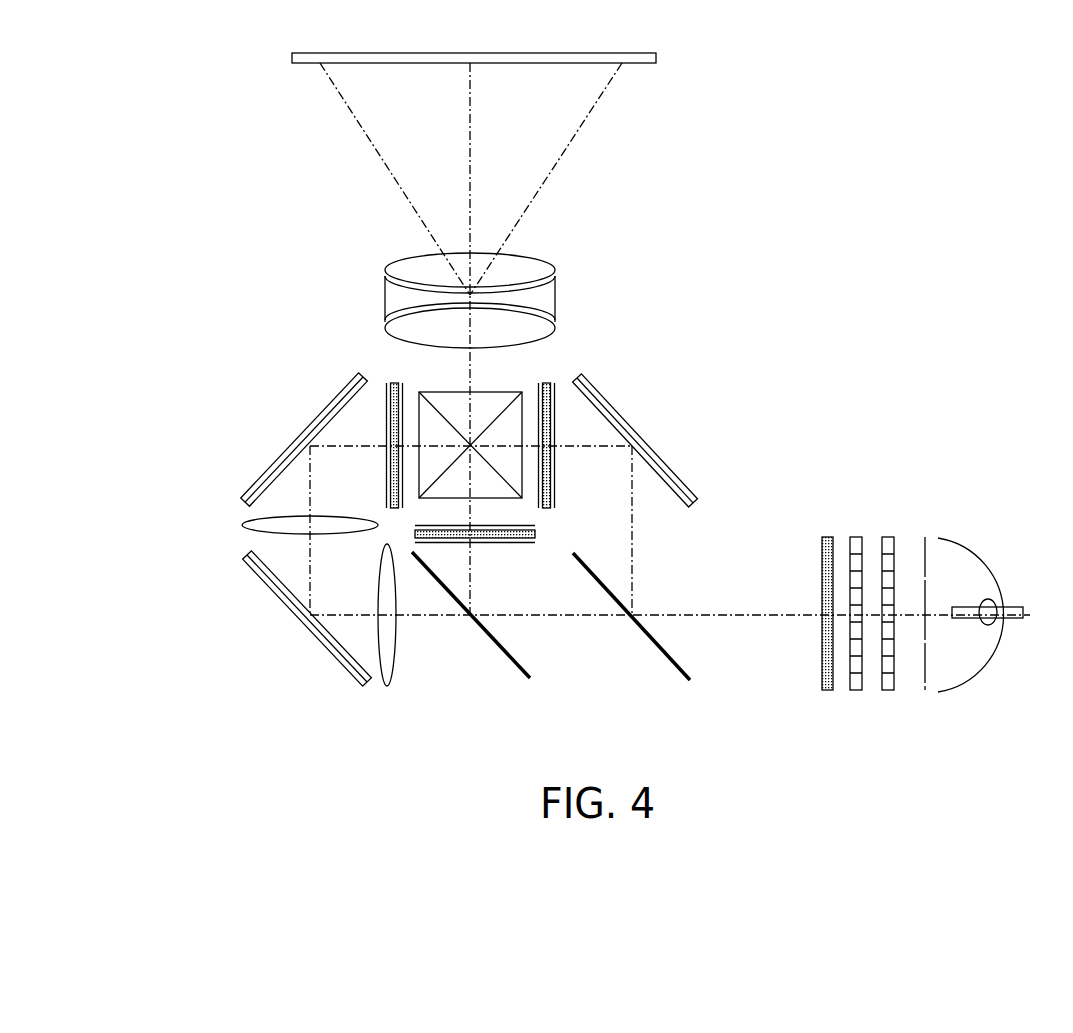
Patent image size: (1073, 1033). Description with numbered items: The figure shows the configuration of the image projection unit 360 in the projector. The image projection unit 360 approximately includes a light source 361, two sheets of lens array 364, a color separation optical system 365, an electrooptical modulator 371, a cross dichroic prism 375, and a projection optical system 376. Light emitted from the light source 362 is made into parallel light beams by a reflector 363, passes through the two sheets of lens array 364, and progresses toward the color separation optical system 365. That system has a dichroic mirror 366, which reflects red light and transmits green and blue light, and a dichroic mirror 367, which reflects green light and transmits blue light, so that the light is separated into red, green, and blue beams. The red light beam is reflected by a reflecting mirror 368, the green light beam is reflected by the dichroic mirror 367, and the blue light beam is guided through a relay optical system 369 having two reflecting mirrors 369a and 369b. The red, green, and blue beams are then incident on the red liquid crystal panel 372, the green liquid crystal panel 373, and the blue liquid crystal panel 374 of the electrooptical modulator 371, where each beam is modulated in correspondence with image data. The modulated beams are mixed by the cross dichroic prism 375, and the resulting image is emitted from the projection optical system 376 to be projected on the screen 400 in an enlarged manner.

The screen 400 is at (640, 64).
The image projection unit 360 is at (585, 507).
The light source 361 is at (974, 596).
The light source 362 is at (988, 625).
The reflector 363 is at (965, 545).
The lens array 364 is at (888, 537).
The color separation optical system 365 is at (589, 657).
The dichroic mirror 366 is at (682, 657).
The dichroic mirror 367 is at (520, 660).
The reflecting mirror 368 is at (633, 430).
The relay optical system 369 is at (272, 529).
The reflecting mirror 369a is at (327, 655).
The reflecting mirror 369b is at (318, 410).
The electrooptical modulator 371 is at (621, 434).
The red liquid crystal panel 372 is at (548, 505).
The green liquid crystal panel 373 is at (537, 538).
The blue liquid crystal panel 374 is at (393, 383).
The cross dichroic prism 375 is at (455, 397).
The projection optical system 376 is at (557, 290).